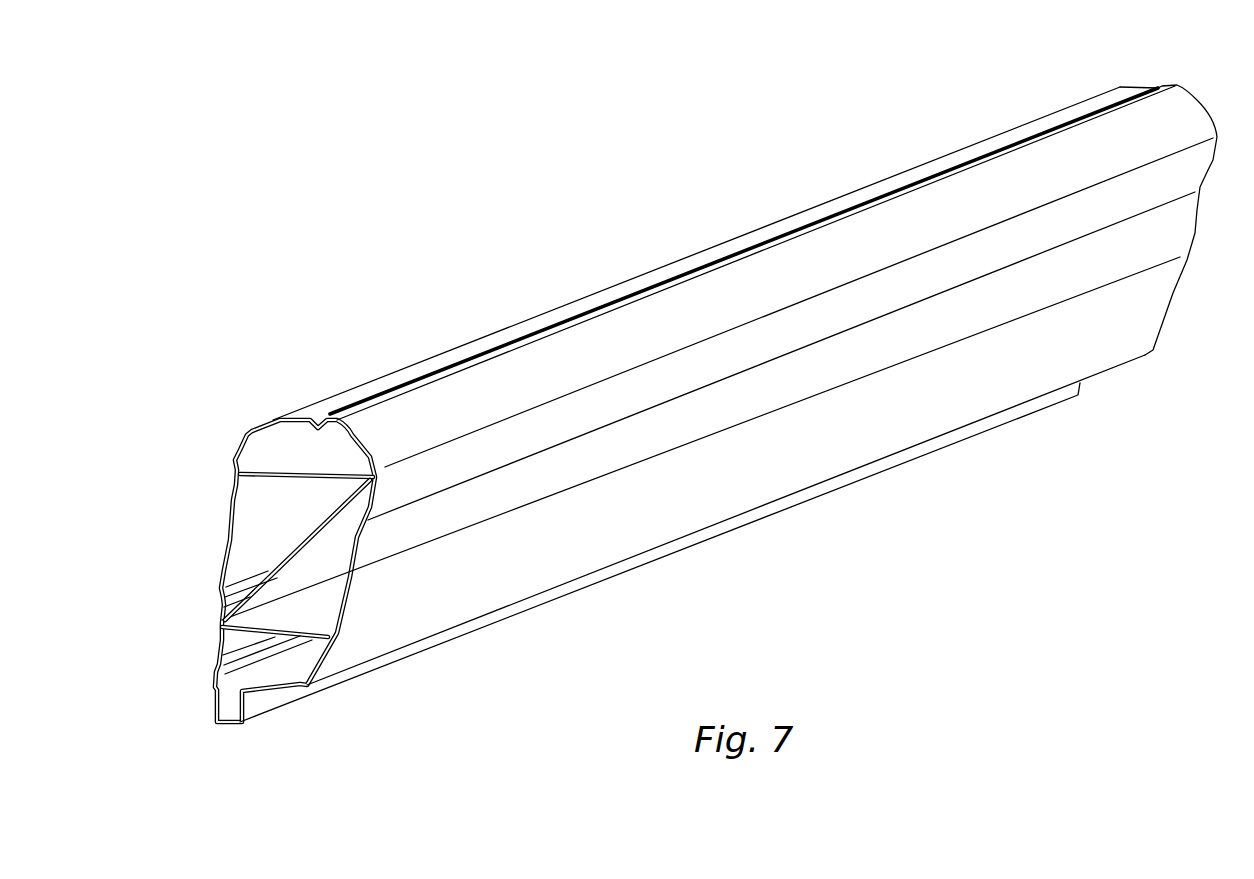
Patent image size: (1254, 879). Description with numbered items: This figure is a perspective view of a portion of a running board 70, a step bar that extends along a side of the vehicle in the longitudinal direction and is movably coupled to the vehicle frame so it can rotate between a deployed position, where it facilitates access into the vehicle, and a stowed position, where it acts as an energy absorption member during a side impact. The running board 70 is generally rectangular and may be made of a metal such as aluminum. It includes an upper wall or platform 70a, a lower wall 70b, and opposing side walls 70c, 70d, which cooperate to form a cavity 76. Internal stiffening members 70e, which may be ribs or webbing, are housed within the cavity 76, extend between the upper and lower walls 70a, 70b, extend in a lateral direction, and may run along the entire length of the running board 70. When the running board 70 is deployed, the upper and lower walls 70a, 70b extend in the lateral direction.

The running board 70 is at (667, 406).
The upper wall 70a is at (238, 648).
The lower wall 70b is at (688, 534).
The side wall 70c is at (280, 677).
The side wall 70d is at (508, 333).
The internal stiffening members 70e is at (300, 538).
The cavity 76 is at (287, 598).